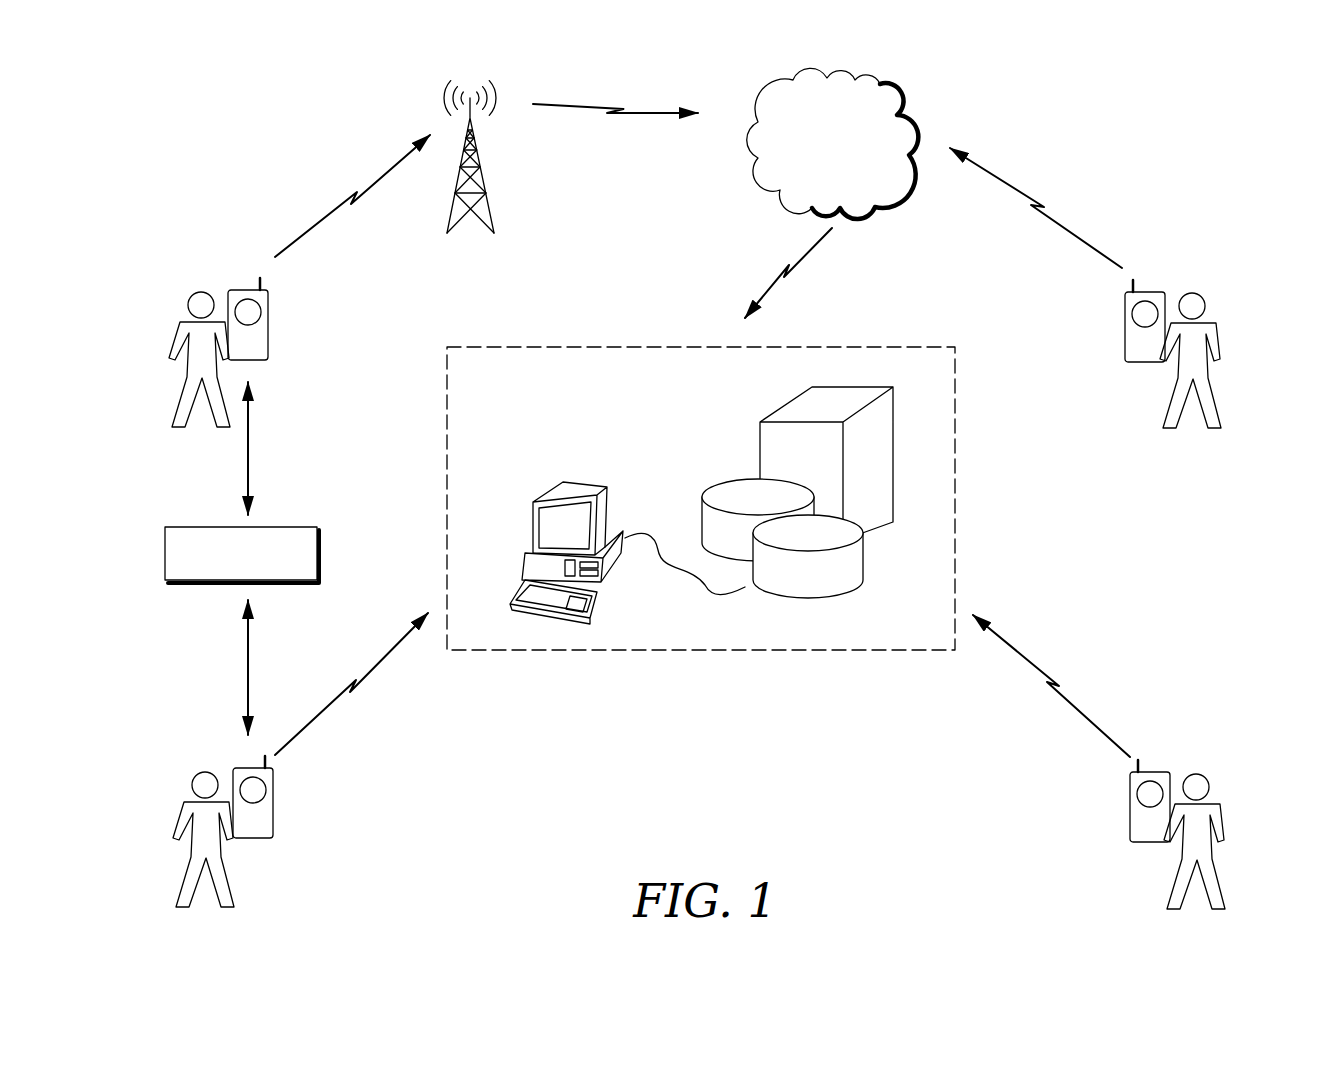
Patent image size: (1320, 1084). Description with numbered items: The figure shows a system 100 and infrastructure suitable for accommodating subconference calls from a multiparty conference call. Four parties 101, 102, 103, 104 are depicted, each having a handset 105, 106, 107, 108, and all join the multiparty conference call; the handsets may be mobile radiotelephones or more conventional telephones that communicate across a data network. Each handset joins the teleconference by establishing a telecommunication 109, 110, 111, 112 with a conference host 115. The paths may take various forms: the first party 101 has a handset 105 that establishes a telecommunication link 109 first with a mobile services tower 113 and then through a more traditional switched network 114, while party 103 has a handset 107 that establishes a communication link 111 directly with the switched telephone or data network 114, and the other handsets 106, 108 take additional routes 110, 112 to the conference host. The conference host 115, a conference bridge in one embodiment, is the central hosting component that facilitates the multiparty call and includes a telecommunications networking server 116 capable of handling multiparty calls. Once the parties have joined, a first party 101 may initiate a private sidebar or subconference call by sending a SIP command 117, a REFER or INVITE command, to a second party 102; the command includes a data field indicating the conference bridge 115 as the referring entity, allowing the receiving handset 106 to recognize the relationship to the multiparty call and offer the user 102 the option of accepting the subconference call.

The system 100 is at (706, 726).
The first party 101 is at (188, 370).
The second party 102 is at (190, 848).
The party 103 is at (1208, 368).
The party 104 is at (1213, 848).
The handset 105 is at (238, 288).
The handset 106 is at (243, 767).
The handset 107 is at (1157, 290).
The handset 108 is at (1162, 771).
The telecommunication link 109 is at (345, 192).
The route 110 is at (388, 646).
The communication link 111 is at (1040, 206).
The route 112 is at (1047, 678).
The mobile services tower 113 is at (488, 193).
The switched network 114 is at (895, 93).
The conference host 115 is at (722, 485).
The telecommunications networking server 116 is at (727, 488).
The SIP command 117 is at (173, 527).